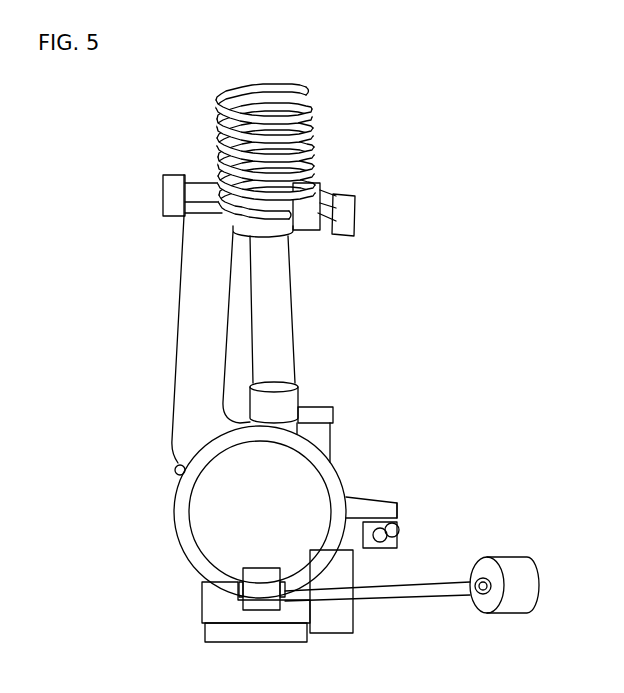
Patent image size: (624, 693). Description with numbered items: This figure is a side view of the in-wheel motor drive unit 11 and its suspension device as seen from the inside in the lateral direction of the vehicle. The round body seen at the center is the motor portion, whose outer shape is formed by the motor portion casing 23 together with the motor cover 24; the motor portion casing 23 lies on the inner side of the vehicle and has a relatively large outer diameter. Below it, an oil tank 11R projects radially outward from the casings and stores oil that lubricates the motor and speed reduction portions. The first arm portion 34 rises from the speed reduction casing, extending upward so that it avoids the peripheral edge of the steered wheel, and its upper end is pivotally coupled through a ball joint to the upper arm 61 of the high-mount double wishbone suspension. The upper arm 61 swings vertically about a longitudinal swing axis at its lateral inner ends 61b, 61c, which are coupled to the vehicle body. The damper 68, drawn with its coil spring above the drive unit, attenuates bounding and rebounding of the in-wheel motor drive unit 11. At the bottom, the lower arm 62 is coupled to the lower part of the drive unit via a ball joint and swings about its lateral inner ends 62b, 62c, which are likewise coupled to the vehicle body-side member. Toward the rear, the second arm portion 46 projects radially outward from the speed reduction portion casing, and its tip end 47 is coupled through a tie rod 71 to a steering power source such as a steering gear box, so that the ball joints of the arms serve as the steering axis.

The in-wheel motor drive unit 11 is at (182, 552).
The oil tank 11R is at (358, 571).
The motor portion casing 23 is at (197, 468).
The motor cover 24 is at (220, 525).
The first arm portion 34 is at (190, 302).
The second arm portion 46 is at (353, 500).
The tip end 47 is at (397, 508).
The upper arm 61 is at (198, 186).
The lateral inner end 61b is at (176, 194).
The lateral inner end 61c is at (350, 209).
The lower arm 62 is at (392, 593).
The lateral inner end 62b is at (260, 610).
The lateral inner end 62c is at (488, 591).
The damper 68 is at (277, 307).
The tie rod 71 is at (398, 537).